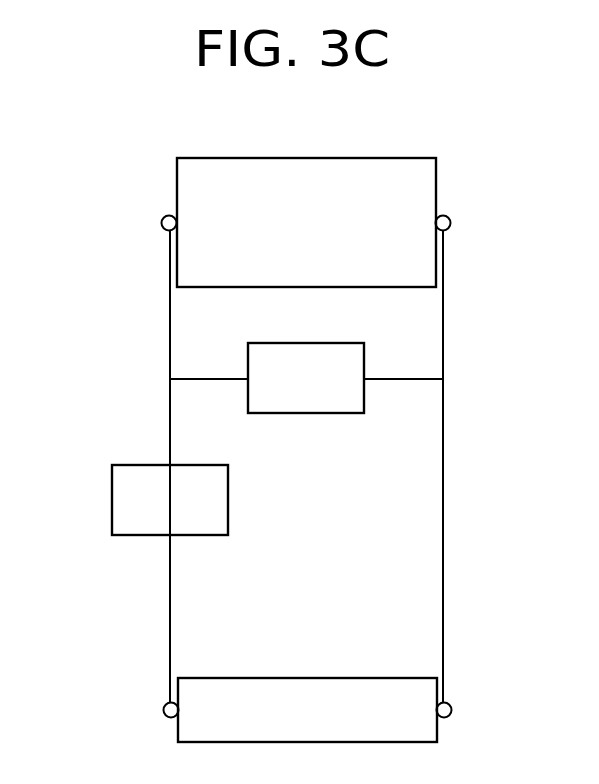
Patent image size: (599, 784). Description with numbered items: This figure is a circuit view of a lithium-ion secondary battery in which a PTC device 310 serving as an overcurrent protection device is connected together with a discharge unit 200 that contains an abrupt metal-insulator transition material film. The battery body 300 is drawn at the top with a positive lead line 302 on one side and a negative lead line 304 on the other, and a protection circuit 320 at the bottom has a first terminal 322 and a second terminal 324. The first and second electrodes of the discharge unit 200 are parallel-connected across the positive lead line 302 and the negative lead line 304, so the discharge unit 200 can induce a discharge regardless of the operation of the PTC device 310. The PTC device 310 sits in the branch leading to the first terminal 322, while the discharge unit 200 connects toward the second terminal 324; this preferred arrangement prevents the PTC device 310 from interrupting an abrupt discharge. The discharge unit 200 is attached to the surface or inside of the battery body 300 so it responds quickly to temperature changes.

The battery body 300 is at (308, 157).
The positive lead line 302 is at (161, 223).
The negative lead line 304 is at (451, 223).
The discharge unit 200 is at (305, 414).
The PTC device 310 is at (112, 501).
The protection circuit 320 is at (309, 677).
The first terminal 322 is at (163, 710).
The second terminal 324 is at (452, 710).